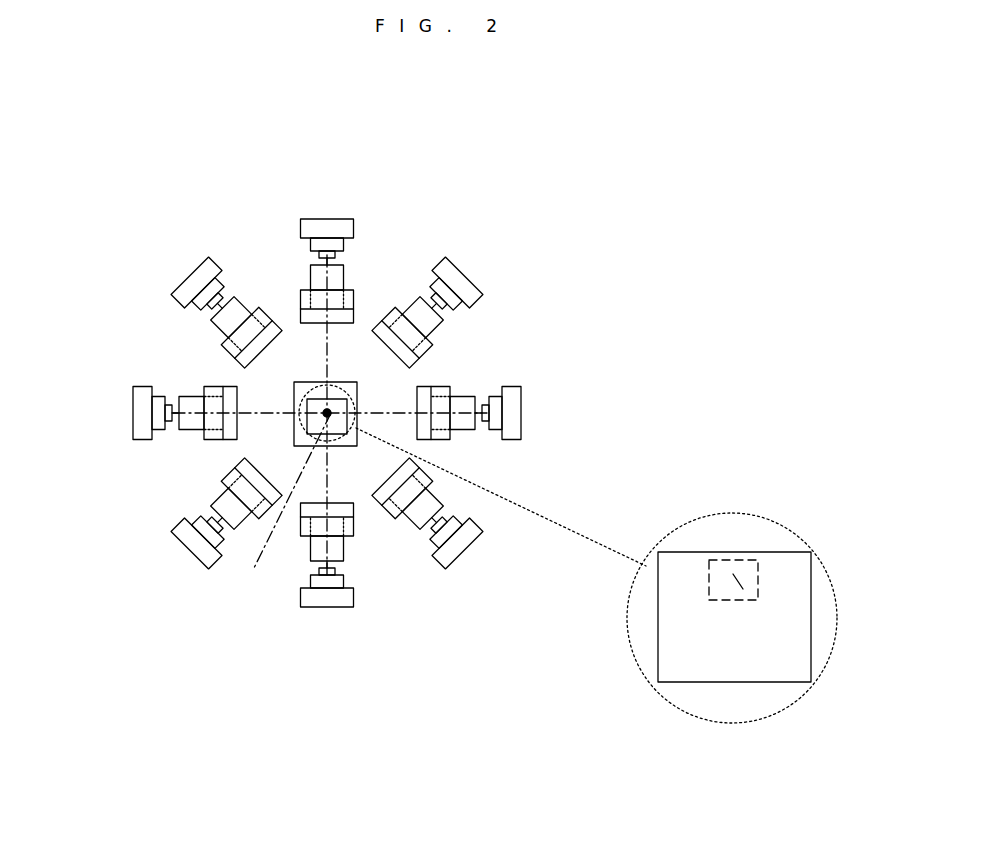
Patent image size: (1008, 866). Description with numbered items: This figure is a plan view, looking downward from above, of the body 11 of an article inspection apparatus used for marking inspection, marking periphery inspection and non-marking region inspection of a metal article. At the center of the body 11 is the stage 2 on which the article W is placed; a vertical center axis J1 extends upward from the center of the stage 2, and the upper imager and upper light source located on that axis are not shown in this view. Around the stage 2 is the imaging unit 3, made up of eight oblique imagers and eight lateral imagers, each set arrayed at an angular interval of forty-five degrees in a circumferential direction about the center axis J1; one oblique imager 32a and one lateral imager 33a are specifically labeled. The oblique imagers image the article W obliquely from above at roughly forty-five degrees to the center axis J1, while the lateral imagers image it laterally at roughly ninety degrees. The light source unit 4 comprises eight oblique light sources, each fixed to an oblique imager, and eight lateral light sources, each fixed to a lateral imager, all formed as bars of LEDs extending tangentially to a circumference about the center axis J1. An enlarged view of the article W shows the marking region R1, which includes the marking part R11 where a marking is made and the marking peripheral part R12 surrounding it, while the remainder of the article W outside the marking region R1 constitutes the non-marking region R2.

The body 11 is at (255, 167).
The stage 2 is at (309, 382).
The article W is at (307, 420).
The center axis J1 is at (283, 504).
The imaging unit 3 is at (257, 250).
The oblique imager 32a is at (337, 550).
The lateral imager 33a is at (372, 602).
The light source unit 4 is at (506, 292).
The marking region R1 is at (750, 497).
The marking part R11 is at (738, 581).
The marking peripheral part R12 is at (721, 573).
The non-marking region R2 is at (706, 668).